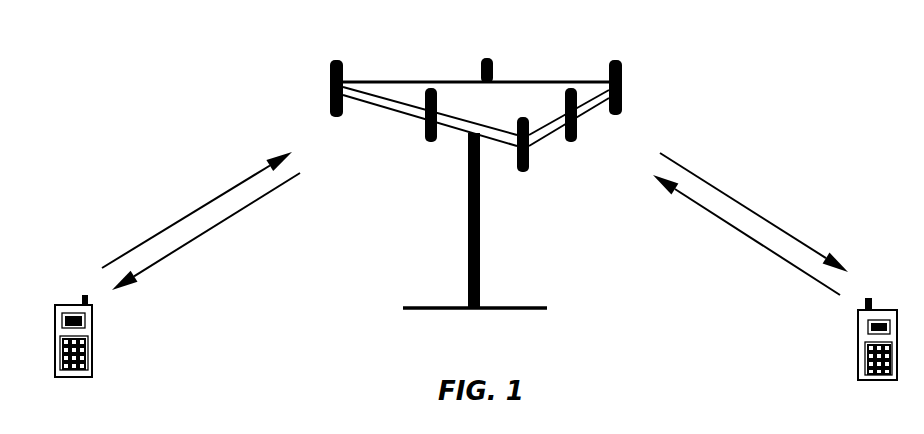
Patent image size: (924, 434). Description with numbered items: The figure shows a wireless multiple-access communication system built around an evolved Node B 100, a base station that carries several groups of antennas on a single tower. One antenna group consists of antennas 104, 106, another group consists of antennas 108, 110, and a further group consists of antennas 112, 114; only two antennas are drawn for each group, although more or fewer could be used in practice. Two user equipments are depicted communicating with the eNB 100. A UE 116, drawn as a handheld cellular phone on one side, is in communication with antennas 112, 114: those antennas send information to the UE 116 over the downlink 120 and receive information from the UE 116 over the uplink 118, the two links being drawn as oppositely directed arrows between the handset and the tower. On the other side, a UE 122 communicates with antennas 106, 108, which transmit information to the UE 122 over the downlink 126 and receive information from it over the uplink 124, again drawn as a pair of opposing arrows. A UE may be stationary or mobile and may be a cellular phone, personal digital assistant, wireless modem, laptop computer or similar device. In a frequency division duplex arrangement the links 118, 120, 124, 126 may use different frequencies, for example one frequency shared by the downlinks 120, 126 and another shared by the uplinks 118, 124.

The evolved Node B 100 is at (468, 240).
The antenna 104 is at (520, 172).
The antenna 106 is at (570, 142).
The antenna 108 is at (615, 60).
The antenna 110 is at (487, 58).
The antenna 112 is at (338, 60).
The antenna 114 is at (430, 142).
The UE 116 is at (68, 303).
The uplink 118 is at (185, 217).
The downlink 120 is at (215, 228).
The UE 122 is at (897, 297).
The uplink 124 is at (738, 230).
The downlink 126 is at (763, 218).